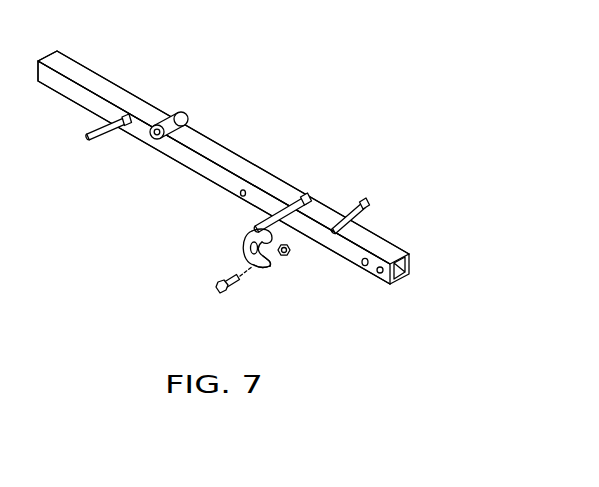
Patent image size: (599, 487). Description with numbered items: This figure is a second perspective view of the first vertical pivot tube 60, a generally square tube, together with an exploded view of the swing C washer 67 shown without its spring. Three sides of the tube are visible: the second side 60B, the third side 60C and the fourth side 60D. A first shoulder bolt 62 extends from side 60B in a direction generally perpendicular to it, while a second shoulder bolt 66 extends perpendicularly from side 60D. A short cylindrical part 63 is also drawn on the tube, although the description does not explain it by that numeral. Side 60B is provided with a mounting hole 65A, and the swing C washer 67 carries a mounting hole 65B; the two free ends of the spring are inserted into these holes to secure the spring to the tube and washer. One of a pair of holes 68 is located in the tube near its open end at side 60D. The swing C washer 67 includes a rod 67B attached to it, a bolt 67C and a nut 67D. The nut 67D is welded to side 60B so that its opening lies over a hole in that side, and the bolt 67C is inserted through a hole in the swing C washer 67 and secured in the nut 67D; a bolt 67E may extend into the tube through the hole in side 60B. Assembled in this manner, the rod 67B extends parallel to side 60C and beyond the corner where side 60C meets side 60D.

The first vertical pivot tube 60 is at (240, 149).
The second side 60B is at (75, 95).
The third side 60C is at (130, 100).
The fourth side 60D is at (412, 266).
The first shoulder bolt 62 is at (103, 129).
The cylindrical sleeve 63 is at (182, 113).
The mounting hole 65A is at (240, 195).
The mounting hole 65B is at (270, 264).
The second shoulder bolt 66 is at (367, 199).
The swing C washer 67 is at (247, 243).
The rod 67B is at (304, 197).
The bolt 67C is at (218, 290).
The nut 67D is at (289, 254).
The bolt 67E is at (259, 266).
The hole 68 is at (366, 267).